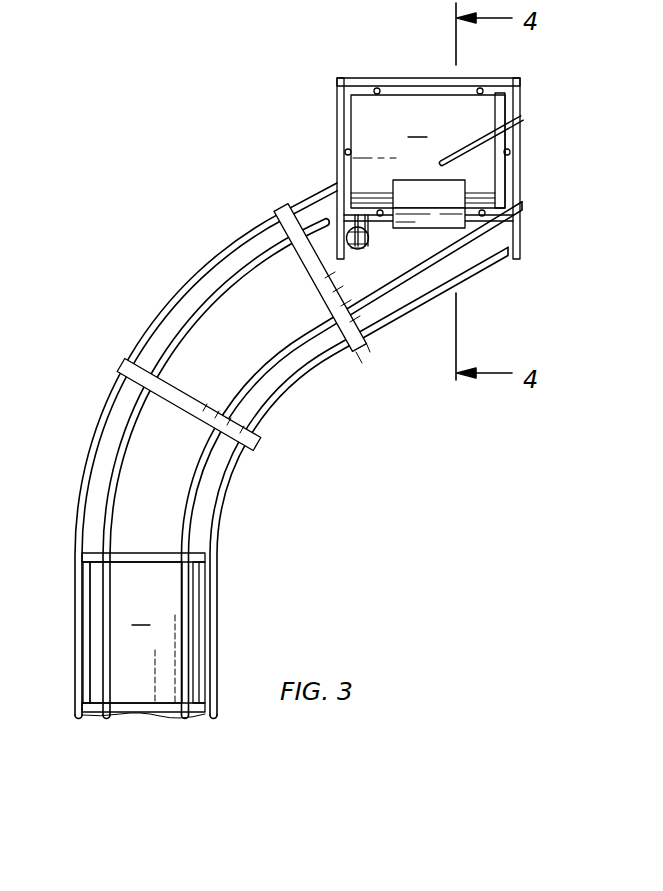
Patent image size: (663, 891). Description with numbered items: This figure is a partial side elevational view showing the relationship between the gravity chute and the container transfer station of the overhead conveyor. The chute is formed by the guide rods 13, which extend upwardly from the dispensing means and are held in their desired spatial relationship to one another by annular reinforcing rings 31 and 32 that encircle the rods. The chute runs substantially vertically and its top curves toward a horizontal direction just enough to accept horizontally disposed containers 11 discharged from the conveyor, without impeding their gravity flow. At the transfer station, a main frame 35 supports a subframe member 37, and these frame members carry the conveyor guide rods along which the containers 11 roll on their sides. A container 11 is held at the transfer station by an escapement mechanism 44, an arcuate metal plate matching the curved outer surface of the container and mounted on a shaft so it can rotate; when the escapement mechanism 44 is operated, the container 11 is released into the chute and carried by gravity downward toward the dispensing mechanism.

The container 11 is at (302, 398).
The guide rods 13 is at (203, 305).
The annular reinforcing rings 31 is at (282, 212).
The cross member 32 is at (120, 367).
The main frame 35 is at (521, 227).
The subframe member 37 is at (337, 108).
The escapement mechanism 44 is at (446, 203).